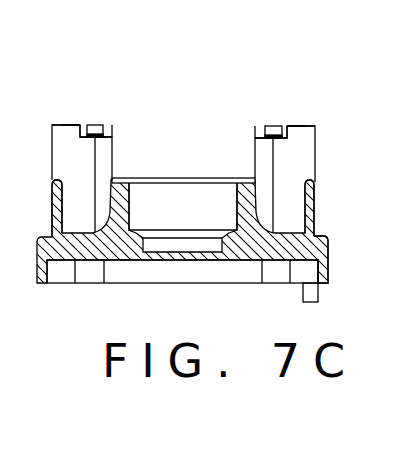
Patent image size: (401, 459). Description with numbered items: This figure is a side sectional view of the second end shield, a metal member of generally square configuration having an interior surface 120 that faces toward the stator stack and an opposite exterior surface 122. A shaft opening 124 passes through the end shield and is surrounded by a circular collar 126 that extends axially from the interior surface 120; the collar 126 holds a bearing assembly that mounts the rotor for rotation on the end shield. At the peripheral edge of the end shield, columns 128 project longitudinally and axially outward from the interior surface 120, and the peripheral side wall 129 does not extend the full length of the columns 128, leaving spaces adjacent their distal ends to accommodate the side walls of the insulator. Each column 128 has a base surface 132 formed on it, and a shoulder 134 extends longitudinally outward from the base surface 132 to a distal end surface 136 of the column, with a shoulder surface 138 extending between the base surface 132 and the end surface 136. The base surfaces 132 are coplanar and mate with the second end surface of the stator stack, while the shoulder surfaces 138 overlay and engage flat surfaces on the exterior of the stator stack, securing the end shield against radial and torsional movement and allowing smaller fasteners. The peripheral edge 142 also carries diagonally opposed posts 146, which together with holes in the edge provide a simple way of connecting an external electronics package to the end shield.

The interior surface 120 is at (84, 233).
The exterior surface 122 is at (58, 257).
The shaft opening 124 is at (182, 255).
The circular collar 126 is at (130, 202).
The column 128 is at (60, 150).
The peripheral side wall 129 is at (52, 185).
The base surface 132 is at (107, 125).
The shoulder 134 is at (59, 127).
The distal end surface 136 is at (70, 126).
The shoulder surface 138 is at (83, 126).
The peripheral edge 142 is at (329, 270).
The post 146 is at (312, 293).